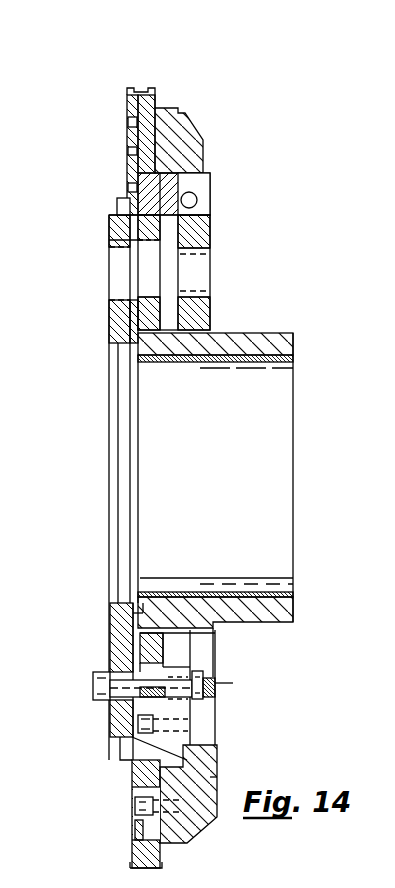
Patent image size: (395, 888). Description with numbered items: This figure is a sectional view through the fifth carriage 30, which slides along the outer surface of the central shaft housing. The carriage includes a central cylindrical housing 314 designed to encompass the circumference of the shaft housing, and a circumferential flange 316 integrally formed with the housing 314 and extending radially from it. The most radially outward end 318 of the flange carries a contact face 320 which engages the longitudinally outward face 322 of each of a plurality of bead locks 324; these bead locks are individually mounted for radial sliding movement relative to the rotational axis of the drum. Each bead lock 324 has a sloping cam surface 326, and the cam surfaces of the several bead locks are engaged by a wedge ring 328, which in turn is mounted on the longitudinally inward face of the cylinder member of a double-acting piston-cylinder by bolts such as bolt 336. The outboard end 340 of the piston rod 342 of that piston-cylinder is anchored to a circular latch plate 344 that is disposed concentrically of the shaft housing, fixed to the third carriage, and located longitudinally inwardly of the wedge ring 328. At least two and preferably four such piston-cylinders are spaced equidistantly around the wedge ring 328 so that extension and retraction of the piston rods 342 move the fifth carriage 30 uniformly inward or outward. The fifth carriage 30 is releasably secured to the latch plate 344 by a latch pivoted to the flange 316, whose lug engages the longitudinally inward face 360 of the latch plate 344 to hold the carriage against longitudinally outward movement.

The fifth carriage 30 is at (240, 316).
The central cylindrical housing 314 is at (288, 350).
The circumferential flange 316 is at (207, 238).
The most radially outward end of the flange 318 is at (195, 152).
The contact face 320 is at (184, 205).
The longitudinally outward face of bead lock 322 is at (172, 181).
The bead lock 324 is at (155, 93).
The sloping cam surface 326 is at (194, 210).
The wedge ring 328 is at (120, 240).
The bolt 336 is at (150, 738).
The outboard end of piston rod 340 is at (220, 695).
The piston rod 342 is at (218, 681).
The latch plate 344 is at (112, 710).
The longitudinally inward face of latch plate 360 is at (117, 220).